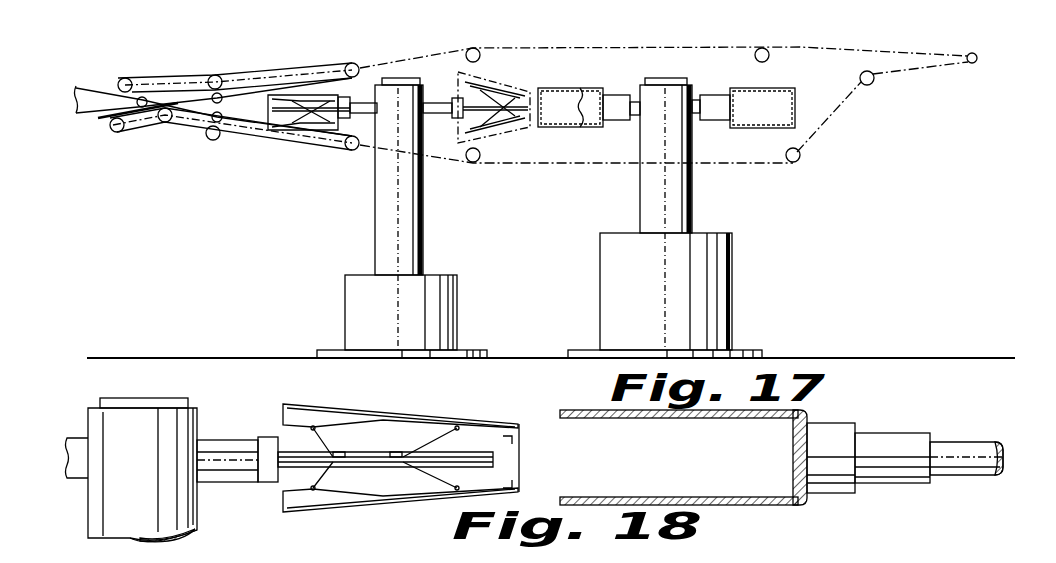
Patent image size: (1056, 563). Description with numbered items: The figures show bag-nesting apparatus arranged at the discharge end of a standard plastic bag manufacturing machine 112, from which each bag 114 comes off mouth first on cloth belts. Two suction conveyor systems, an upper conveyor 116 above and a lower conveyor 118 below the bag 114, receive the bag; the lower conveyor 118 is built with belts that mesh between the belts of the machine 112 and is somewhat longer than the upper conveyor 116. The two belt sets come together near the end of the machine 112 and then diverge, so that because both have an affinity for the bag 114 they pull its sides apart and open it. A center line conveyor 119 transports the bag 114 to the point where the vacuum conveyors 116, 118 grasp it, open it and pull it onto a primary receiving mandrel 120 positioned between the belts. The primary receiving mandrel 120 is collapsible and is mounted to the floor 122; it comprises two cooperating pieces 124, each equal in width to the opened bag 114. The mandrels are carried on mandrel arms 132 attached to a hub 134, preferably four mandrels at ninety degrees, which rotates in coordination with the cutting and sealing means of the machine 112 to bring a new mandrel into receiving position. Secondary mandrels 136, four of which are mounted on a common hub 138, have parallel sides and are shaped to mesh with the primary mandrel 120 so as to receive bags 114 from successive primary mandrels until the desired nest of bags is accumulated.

In FIG. 17, the plastic bag manufacturing machine 112 is at (93, 90).
In FIG. 18, the bag 114 is at (371, 556).
In FIG. 17, the upper conveyor 116 is at (169, 72).
In FIG. 17, the lower conveyor 118 is at (317, 140).
In FIG. 17, the center line conveyor 119 is at (533, 44).
In FIG. 17, the primary receiving mandrel 120 is at (262, 118).
In FIG. 18, the primary receiving mandrel 120 is at (290, 480).
In FIG. 17, the floor 122 is at (180, 357).
In FIG. 18, the cooperating pieces 124 is at (518, 457).
In FIG. 17, the mandrel arm 132 is at (355, 150).
In FIG. 18, the mandrel arm 132 is at (241, 403).
In FIG. 17, the hub 134 is at (400, 76).
In FIG. 17, the secondary mandrel 136 is at (583, 90).
In FIG. 18, the secondary mandrel 136 is at (790, 507).
In FIG. 17, the common hub 138 is at (663, 76).